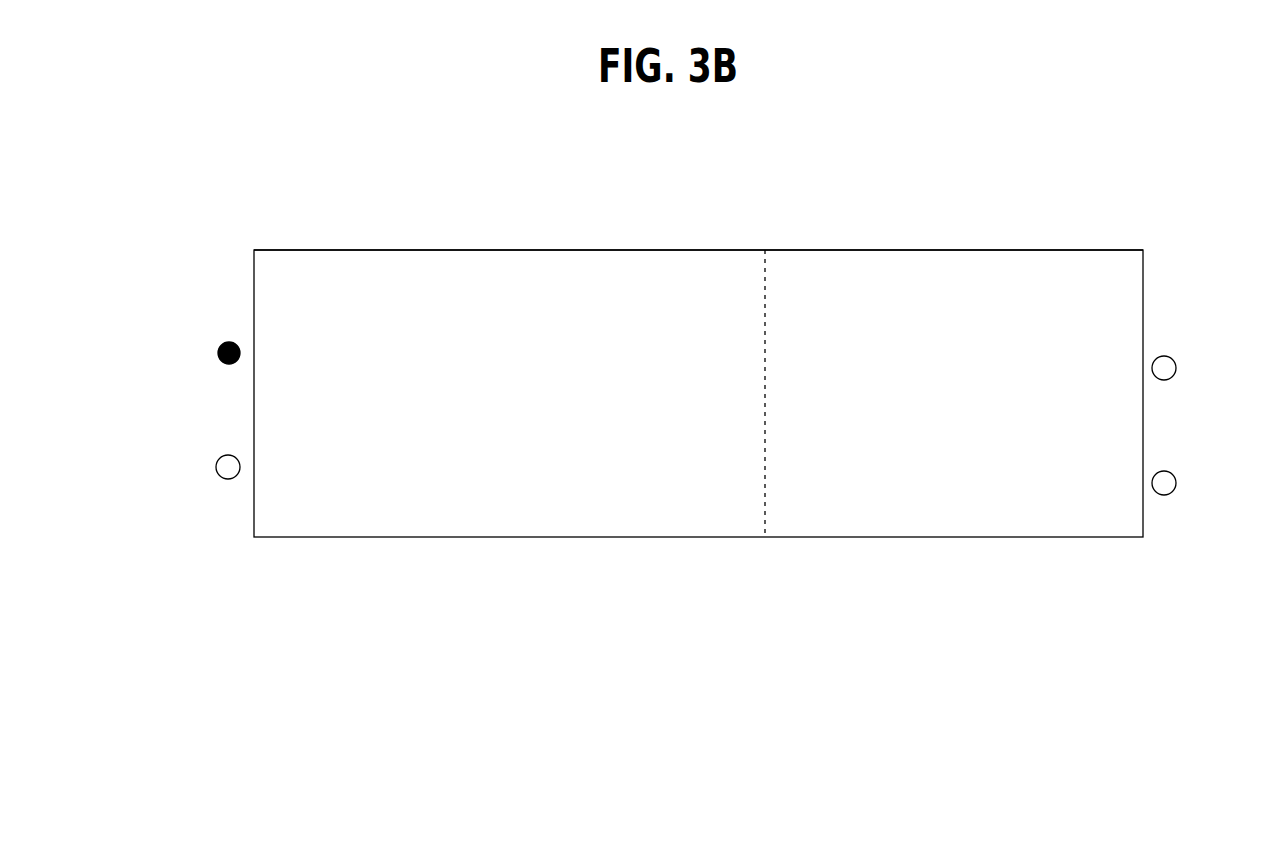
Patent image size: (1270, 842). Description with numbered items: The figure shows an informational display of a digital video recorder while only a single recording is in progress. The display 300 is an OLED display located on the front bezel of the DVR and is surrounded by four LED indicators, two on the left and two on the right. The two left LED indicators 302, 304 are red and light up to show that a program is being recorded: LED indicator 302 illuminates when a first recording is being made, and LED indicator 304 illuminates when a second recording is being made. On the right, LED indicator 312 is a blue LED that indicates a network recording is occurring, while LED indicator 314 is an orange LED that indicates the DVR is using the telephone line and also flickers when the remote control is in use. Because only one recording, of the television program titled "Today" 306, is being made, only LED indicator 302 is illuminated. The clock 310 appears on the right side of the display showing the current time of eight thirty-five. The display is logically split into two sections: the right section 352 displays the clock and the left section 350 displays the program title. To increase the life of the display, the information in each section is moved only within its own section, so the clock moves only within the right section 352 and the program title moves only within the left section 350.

The display 300 is at (673, 207).
The LED indicator 302 is at (198, 368).
The LED indicator 304 is at (198, 482).
The date text 306 is at (370, 307).
The clock 310 is at (883, 409).
The LED indicator 312 is at (1224, 384).
The LED indicator 314 is at (1224, 499).
The left section 350 is at (500, 244).
The right section 352 is at (978, 246).